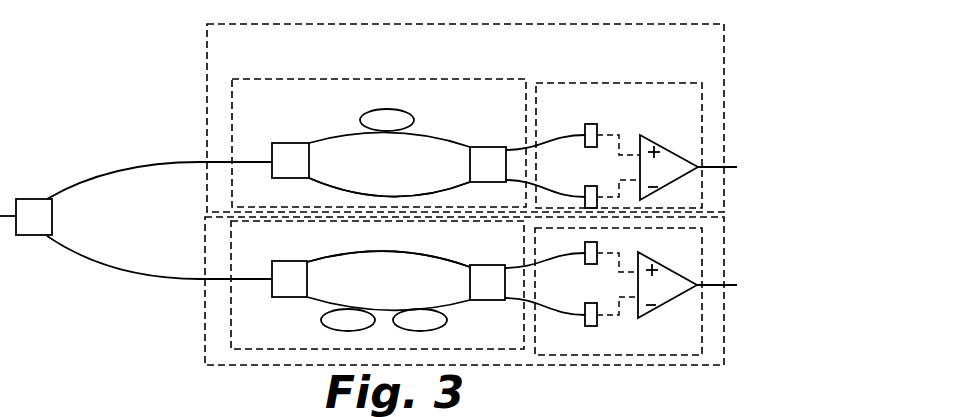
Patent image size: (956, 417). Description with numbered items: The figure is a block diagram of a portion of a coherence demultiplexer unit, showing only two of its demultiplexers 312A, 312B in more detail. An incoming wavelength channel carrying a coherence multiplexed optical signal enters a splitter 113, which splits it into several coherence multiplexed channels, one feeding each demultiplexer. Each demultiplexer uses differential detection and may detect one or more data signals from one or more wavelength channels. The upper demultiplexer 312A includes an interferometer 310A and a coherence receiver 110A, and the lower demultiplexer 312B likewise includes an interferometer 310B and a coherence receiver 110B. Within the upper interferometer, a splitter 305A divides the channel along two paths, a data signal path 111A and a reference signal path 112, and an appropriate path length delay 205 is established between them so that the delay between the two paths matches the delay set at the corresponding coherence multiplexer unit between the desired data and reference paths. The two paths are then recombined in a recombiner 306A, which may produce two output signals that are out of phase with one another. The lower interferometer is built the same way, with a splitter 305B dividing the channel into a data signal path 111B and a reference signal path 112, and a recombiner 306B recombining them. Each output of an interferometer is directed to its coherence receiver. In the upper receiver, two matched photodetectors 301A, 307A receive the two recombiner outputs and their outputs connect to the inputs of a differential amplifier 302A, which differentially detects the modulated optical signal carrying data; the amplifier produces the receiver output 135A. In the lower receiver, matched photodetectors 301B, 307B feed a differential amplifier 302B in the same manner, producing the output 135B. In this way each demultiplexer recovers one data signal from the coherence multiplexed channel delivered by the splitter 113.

The splitter 113 is at (136, 220).
The demultiplexer 312A is at (334, 12).
The interferometer 310A is at (459, 66).
The coherence receiver 110A is at (622, 66).
The data signal path 111A is at (329, 139).
The reference signal path 112 is at (350, 190).
The path length delay 205 is at (387, 108).
The splitter 305A is at (282, 146).
The recombiner 306A is at (521, 155).
The photodetector 301A is at (603, 127).
The photodetector 307A is at (603, 185).
The differential amplifier 302A is at (669, 156).
The first output signal 135A is at (739, 165).
The demultiplexer 312B is at (633, 367).
The interferometer 310B is at (506, 351).
The coherence receiver 110B is at (574, 357).
The data signal path 111B is at (317, 309).
The splitter 305B is at (281, 299).
The recombiner 306B is at (526, 297).
The photodetector 301B is at (593, 270).
The photodetector 307B is at (593, 326).
The differential amplifier 302B is at (667, 302).
The second output signal 135B is at (748, 270).